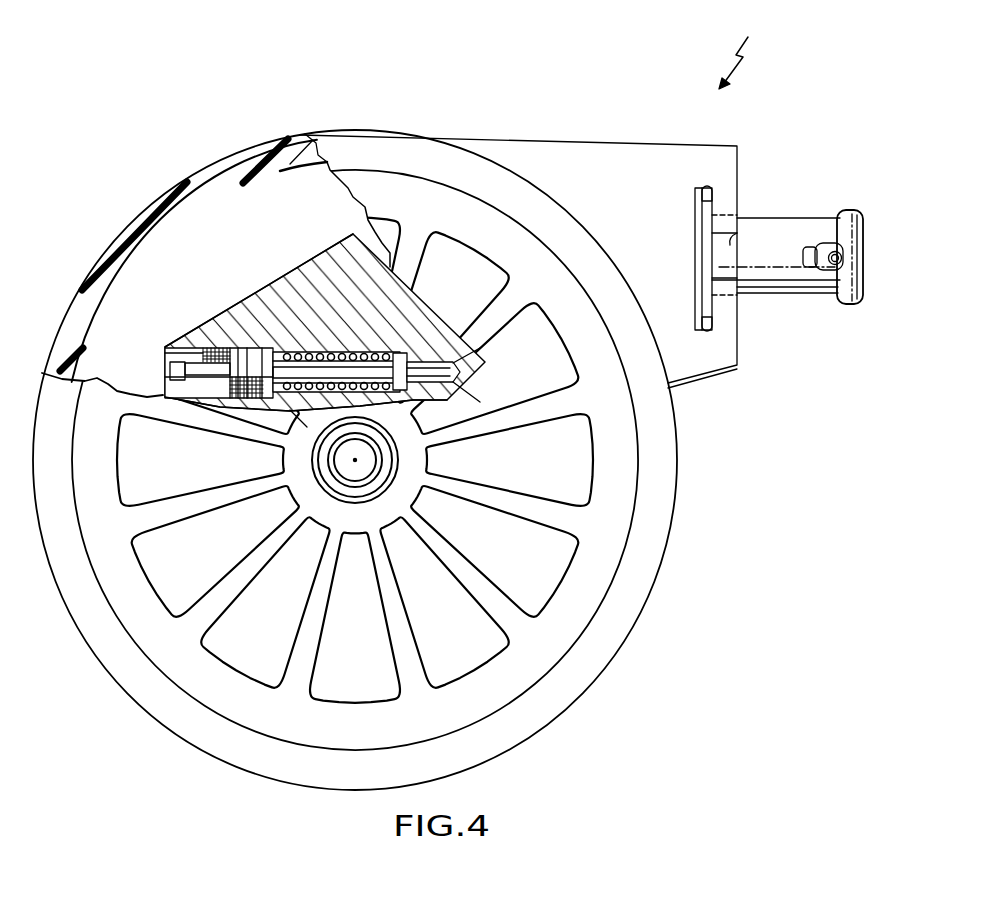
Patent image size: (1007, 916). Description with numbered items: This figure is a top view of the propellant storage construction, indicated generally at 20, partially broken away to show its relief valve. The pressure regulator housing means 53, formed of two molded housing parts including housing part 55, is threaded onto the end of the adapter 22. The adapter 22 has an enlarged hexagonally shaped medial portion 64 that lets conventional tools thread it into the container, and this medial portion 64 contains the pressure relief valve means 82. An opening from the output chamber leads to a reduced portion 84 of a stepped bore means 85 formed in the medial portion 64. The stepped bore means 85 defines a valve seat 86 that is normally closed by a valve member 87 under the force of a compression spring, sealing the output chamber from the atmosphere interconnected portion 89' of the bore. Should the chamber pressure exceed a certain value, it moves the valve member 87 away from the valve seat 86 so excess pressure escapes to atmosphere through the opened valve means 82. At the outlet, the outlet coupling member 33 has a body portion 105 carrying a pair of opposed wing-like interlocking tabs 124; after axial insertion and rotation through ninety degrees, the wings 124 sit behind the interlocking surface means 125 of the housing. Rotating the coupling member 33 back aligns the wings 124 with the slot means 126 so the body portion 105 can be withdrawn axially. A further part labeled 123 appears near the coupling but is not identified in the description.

The handwheel assembly 20 is at (757, 50).
The adapter 22 is at (258, 297).
The outlet coupling member 33 is at (823, 297).
The housing means 53 is at (190, 172).
The housing part 55 is at (622, 468).
The medial portion 64 is at (338, 238).
The pressure relief valve means 82 is at (315, 338).
The reduced portion 84 is at (465, 393).
The stepped bore means 85 is at (410, 293).
The valve seat 86 is at (458, 334).
The valve member 87 is at (428, 400).
The atmosphere interconnected portion 89' is at (251, 444).
The body portion 105 is at (782, 227).
The nut 123 is at (808, 245).
The wing-like interlocking tabs 124 is at (703, 215).
The interlocking surface means 125 is at (708, 192).
The slot means 126 is at (733, 242).